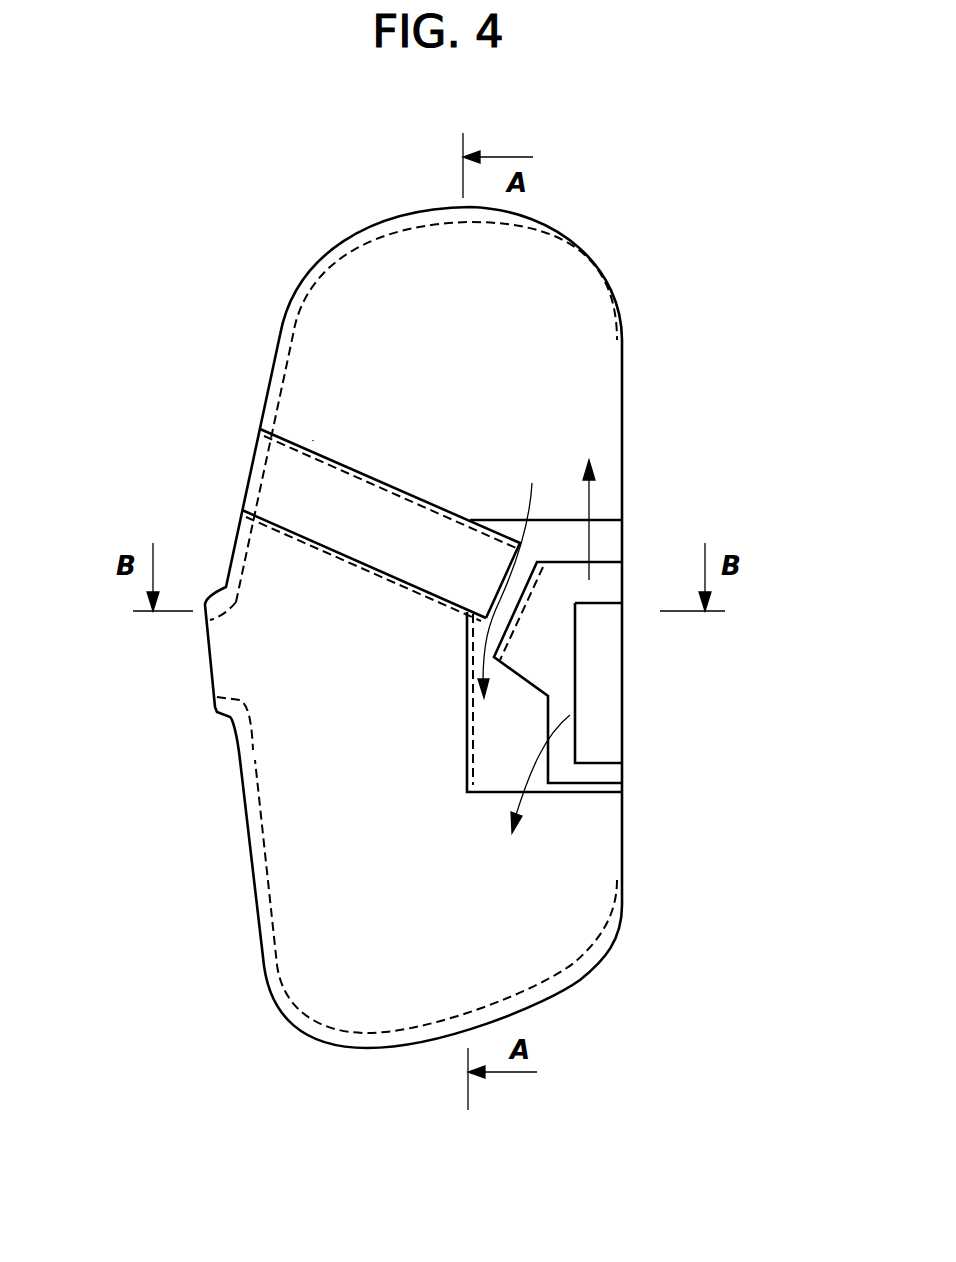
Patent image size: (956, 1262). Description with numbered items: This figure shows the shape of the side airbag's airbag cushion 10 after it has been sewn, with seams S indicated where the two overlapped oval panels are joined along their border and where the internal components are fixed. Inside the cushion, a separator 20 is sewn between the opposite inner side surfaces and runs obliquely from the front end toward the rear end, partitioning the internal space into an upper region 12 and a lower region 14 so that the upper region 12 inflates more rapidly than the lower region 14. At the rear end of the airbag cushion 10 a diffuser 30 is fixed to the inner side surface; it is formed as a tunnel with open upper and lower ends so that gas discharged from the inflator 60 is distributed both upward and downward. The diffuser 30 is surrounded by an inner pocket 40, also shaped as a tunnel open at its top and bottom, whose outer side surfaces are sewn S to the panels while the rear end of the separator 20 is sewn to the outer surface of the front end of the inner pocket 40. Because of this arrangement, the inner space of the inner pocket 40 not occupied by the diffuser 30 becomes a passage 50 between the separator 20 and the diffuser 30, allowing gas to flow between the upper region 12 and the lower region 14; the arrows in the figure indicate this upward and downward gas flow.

The airbag cushion 10 is at (260, 293).
The upper region 12 is at (533, 313).
The lower region 14 is at (343, 902).
The separator 20 is at (288, 492).
The diffuser 30 is at (603, 560).
The inner pocket 40 is at (603, 520).
The passage 50 is at (467, 637).
The inflator 60 is at (603, 722).
The sewn seam S is at (313, 450).